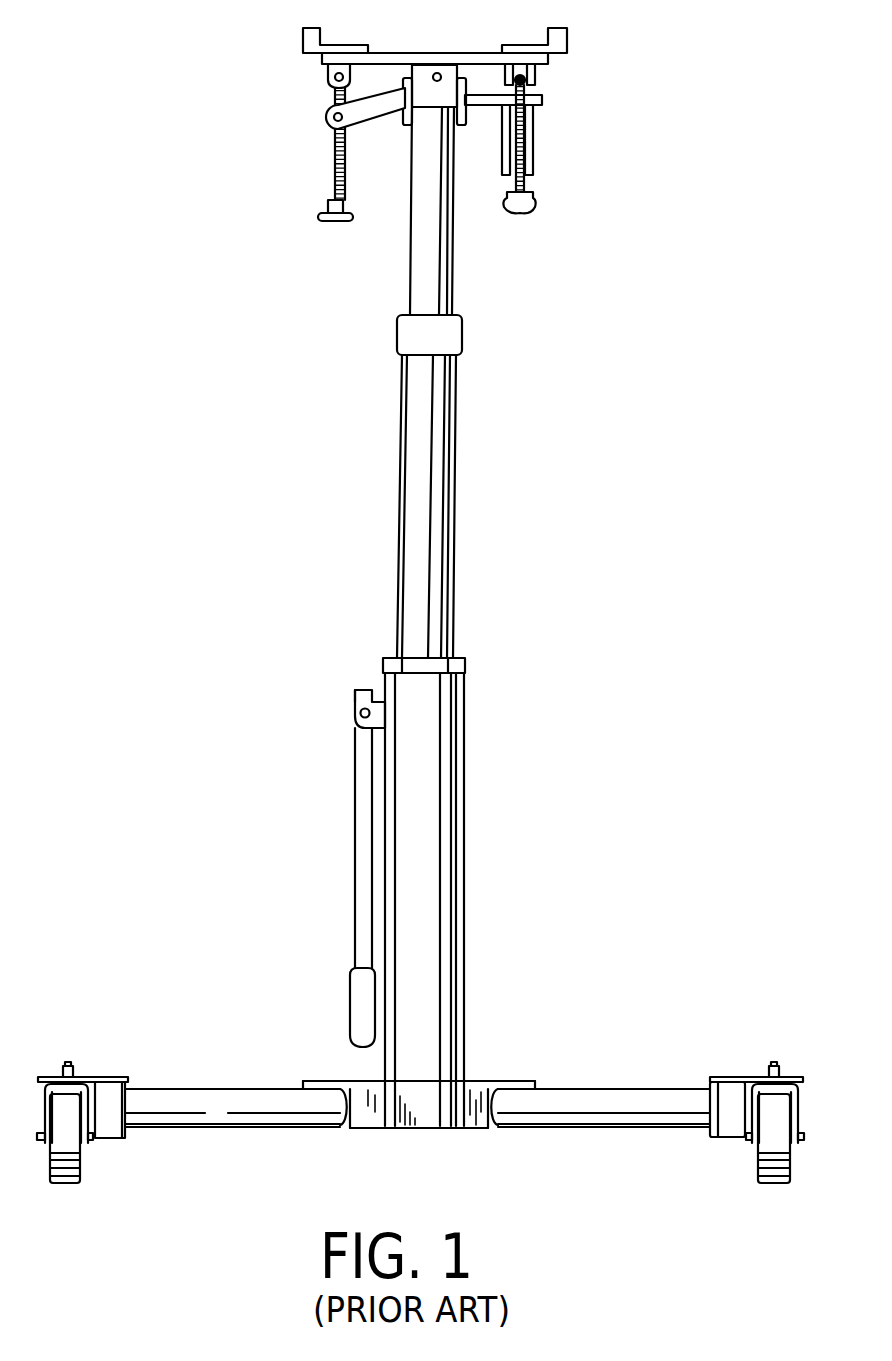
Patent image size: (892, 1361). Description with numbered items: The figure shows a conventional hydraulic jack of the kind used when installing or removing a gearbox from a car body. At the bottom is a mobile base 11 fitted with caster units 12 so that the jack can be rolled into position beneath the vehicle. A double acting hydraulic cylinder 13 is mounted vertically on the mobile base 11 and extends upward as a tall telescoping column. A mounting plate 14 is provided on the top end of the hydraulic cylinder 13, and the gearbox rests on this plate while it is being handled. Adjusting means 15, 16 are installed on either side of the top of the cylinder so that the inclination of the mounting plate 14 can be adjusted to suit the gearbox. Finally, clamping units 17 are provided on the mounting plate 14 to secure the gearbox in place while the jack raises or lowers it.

The mobile base 11 is at (472, 1093).
The caster units 12 is at (126, 1138).
The double acting hydraulic cylinder 13 is at (466, 830).
The mounting plate 14 is at (459, 63).
The adjusting means 15 is at (345, 164).
The adjusting means 16 is at (536, 156).
The clamping units 17 is at (567, 46).